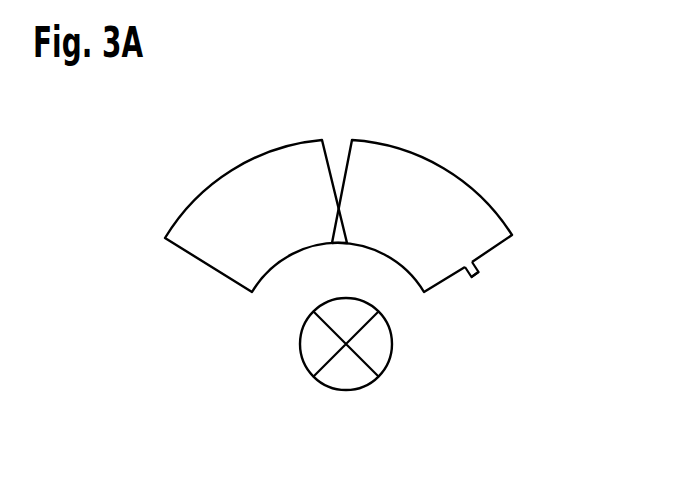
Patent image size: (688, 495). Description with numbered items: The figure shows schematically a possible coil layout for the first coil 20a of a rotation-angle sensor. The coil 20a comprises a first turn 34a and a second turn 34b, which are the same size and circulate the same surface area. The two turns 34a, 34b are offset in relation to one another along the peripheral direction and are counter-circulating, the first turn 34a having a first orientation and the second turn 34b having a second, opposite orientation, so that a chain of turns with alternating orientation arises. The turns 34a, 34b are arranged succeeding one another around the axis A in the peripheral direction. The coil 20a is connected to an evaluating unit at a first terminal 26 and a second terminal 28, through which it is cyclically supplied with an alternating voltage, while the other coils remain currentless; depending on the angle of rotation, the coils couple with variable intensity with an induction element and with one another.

The first coil 20a is at (396, 227).
The first turn 34a is at (217, 266).
The second turn 34b is at (418, 160).
The first terminal 26 is at (481, 276).
The second terminal 28 is at (472, 274).
The axis A is at (345, 345).